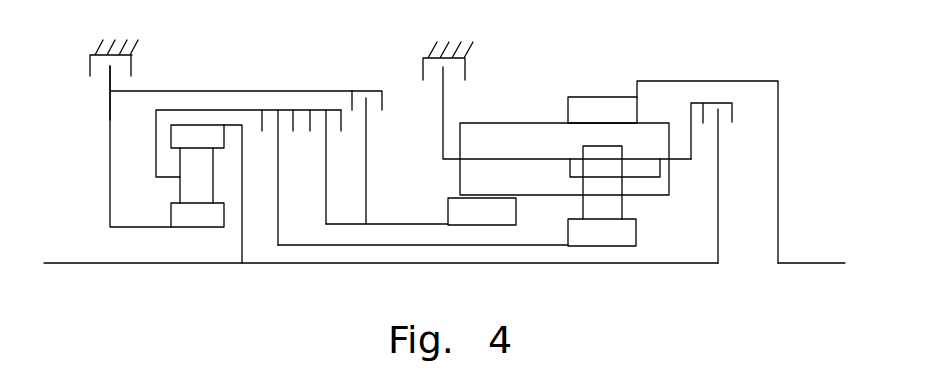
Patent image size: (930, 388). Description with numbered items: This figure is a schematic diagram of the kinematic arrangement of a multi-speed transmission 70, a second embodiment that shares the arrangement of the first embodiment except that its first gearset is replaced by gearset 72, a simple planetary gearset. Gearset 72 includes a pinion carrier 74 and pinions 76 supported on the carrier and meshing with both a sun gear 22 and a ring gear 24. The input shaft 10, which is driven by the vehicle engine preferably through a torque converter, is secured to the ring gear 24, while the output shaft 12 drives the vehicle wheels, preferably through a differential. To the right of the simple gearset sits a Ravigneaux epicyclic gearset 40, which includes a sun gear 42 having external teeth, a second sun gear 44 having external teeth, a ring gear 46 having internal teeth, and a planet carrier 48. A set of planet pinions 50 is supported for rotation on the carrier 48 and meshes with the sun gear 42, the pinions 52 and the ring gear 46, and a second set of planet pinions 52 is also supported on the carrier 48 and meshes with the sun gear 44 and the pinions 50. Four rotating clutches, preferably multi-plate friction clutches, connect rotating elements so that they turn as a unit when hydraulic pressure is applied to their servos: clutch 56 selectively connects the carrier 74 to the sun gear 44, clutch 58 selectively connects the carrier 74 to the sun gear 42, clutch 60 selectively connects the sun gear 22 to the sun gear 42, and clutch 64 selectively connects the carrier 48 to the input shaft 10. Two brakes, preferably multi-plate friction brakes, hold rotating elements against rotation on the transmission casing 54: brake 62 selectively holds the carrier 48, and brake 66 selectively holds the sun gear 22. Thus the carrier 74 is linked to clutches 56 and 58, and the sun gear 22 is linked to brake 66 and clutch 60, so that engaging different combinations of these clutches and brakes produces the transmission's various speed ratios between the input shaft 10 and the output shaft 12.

The input shaft 10 is at (57, 264).
The output shaft 12 is at (812, 264).
The sun gear 22 is at (197, 215).
The ring gear 24 is at (197, 137).
The Ravigneaux epicyclic gearset 40 is at (553, 107).
The sun gear 42 is at (482, 212).
The sun gear 44 is at (457, 233).
The ring gear 46 is at (602, 109).
The planet carrier 48 is at (680, 160).
The set of planet pinions 50 is at (530, 191).
The set of planet pinions 52 is at (622, 207).
The transmission casing 54 is at (134, 51).
The clutch 56 is at (274, 140).
The clutch 58 is at (323, 133).
The clutch 60 is at (367, 109).
The brake 62 is at (446, 73).
The clutch 64 is at (718, 122).
The brake 66 is at (108, 76).
The transmission 70 is at (62, 175).
The gearset 72 is at (173, 182).
The pinion carrier 74 is at (167, 176).
The pinions 76 is at (197, 175).